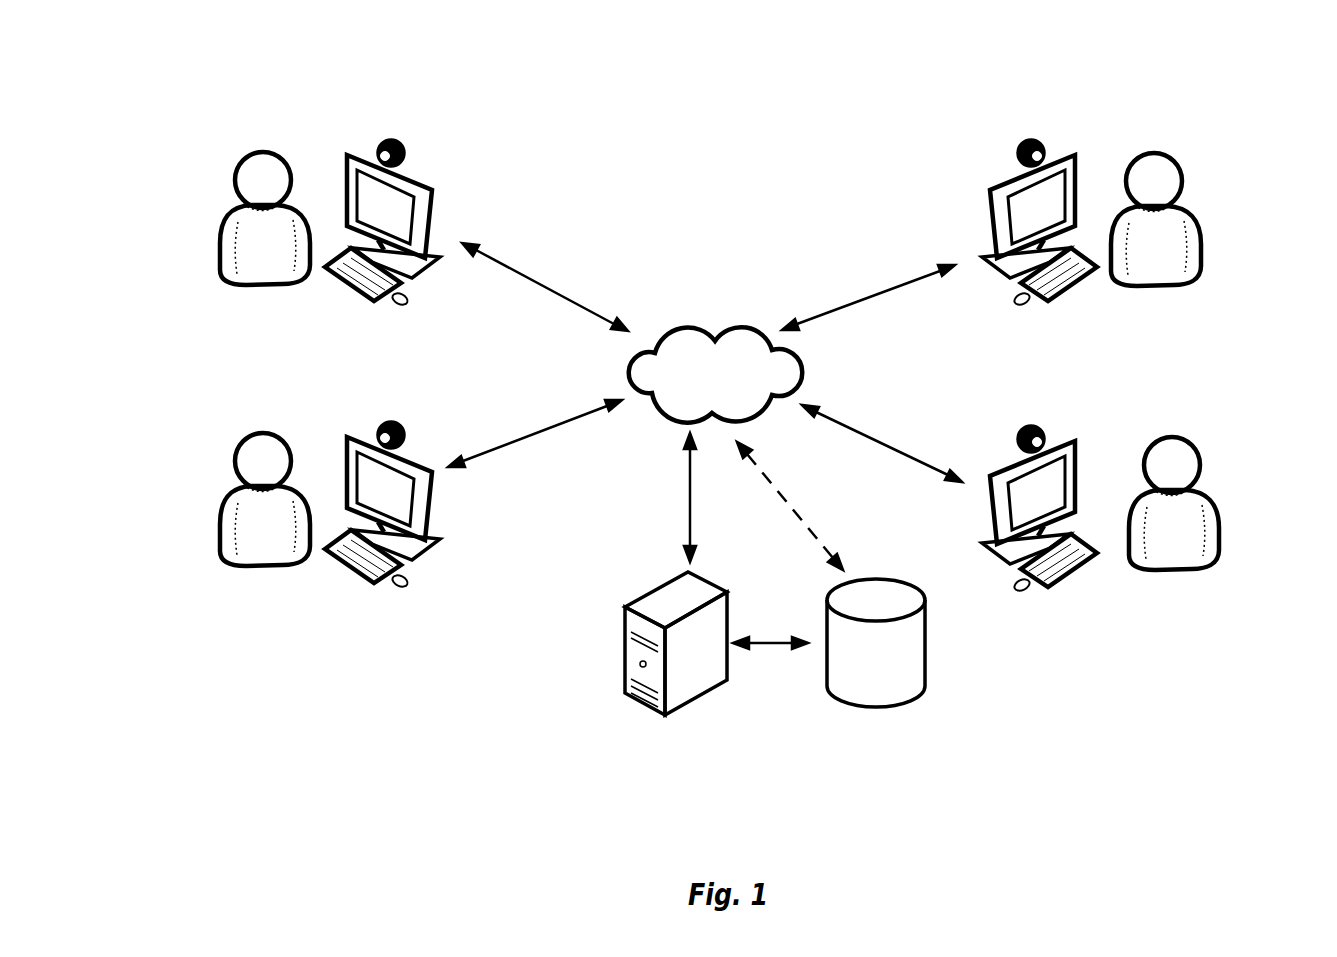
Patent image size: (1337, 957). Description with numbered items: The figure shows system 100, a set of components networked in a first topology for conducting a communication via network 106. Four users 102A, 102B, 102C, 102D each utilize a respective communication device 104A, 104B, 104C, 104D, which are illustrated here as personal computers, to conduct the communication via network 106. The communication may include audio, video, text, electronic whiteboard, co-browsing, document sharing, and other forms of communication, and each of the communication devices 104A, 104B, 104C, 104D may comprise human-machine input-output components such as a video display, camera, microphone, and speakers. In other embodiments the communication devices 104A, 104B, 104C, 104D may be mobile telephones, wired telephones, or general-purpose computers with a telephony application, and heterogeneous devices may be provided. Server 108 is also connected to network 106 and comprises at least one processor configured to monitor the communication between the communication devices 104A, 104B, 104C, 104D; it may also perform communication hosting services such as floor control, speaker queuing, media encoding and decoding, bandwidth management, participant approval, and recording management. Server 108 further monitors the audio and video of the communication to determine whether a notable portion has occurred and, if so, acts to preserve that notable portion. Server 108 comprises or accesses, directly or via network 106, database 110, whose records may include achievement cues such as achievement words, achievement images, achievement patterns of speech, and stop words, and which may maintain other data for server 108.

The system 100 is at (1226, 62).
The user 102A is at (231, 213).
The user 102B is at (231, 493).
The user 102C is at (1190, 207).
The user 102D is at (1215, 495).
The communication device 104A is at (418, 188).
The communication device 104B is at (418, 468).
The communication device 104C is at (1067, 152).
The communication device 104D is at (1070, 435).
The network 106 is at (742, 329).
The server 108 is at (640, 598).
The database 110 is at (925, 643).